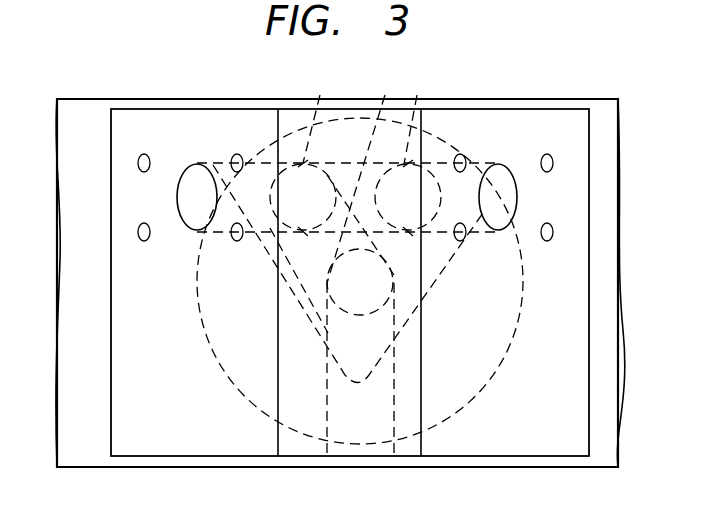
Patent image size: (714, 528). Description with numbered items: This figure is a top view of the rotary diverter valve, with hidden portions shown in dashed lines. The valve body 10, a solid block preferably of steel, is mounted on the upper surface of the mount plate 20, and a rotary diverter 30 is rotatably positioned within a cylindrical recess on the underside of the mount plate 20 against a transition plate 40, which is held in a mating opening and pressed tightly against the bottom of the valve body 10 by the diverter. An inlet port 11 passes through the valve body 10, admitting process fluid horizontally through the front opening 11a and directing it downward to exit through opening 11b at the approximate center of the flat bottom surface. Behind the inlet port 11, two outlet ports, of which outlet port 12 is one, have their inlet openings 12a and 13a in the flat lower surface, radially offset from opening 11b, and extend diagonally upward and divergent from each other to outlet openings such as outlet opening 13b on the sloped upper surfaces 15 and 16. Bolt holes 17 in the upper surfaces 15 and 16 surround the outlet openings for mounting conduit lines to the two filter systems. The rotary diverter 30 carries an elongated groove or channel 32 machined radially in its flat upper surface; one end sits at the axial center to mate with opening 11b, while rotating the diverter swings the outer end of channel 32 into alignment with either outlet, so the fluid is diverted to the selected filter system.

The valve body 10 is at (480, 128).
The mount plate 20 is at (604, 121).
The sloped upper surface 15 is at (132, 357).
The sloped upper surface 16 is at (568, 430).
The bolt holes 17 is at (143, 223).
The outlet port 12 is at (198, 190).
The inlet opening of outlet port 12 12a is at (318, 95).
The inlet opening of outlet port 13 13a is at (418, 95).
The outlet opening of outlet port 13 13b is at (500, 207).
The transition plate 40 is at (386, 95).
The rotary diverter 30 is at (487, 368).
The elongated groove or channel 32 is at (347, 226).
The inlet port 11 is at (372, 391).
The opening of inlet port 11a is at (372, 458).
The opening of inlet port at bottom 11b is at (325, 311).